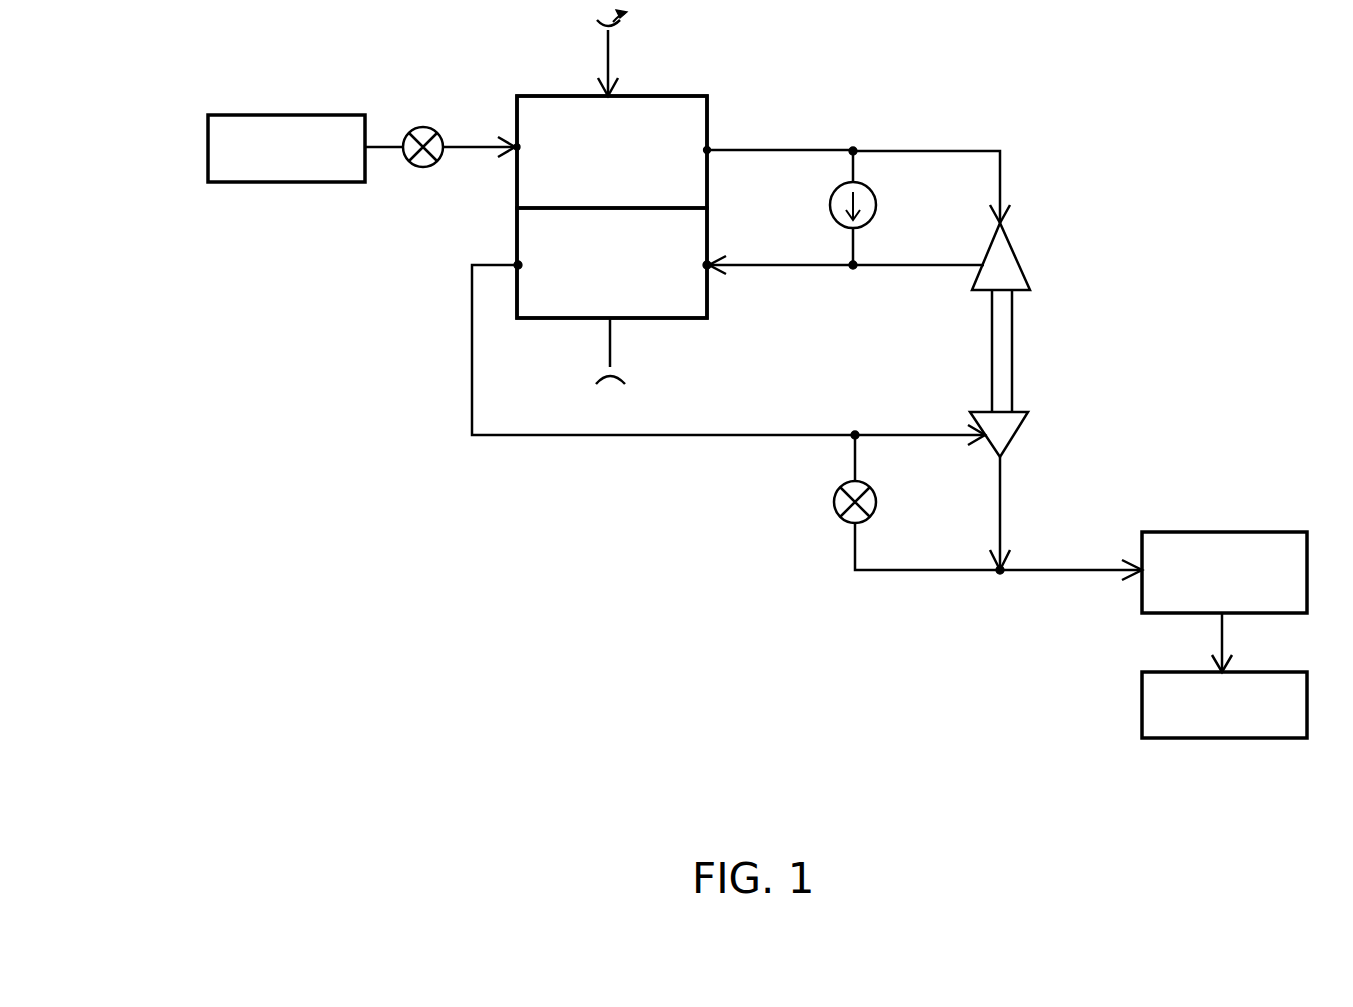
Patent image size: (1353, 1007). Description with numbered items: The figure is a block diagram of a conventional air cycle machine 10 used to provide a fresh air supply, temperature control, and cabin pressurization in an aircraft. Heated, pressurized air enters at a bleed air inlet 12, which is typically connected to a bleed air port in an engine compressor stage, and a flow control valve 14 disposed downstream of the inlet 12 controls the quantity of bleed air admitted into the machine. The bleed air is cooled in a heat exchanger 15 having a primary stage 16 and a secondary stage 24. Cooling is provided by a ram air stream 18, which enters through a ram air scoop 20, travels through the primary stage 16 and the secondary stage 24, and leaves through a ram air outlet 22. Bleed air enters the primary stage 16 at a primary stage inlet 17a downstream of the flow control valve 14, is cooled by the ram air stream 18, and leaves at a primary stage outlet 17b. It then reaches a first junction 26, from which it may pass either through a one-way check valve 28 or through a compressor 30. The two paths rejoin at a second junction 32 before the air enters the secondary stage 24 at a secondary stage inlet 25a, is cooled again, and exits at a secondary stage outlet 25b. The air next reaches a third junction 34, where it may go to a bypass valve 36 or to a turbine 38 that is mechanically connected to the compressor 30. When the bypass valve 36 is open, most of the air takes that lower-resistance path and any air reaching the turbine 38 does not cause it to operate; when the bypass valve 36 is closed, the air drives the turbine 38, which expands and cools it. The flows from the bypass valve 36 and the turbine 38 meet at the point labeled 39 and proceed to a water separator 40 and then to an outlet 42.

The air cycle machine 10 is at (1048, 120).
The bleed air inlet 12 is at (245, 115).
The flow control valve 14 is at (423, 127).
The heat exchanger 15 is at (558, 82).
The primary stage 16 is at (707, 108).
The primary stage inlet 17a is at (512, 146).
The primary stage outlet 17b is at (710, 150).
The ram air stream 18 is at (612, 52).
The ram air scoop 20 is at (627, 12).
The ram air outlet 22 is at (610, 386).
The secondary stage 24 is at (707, 222).
The secondary stage inlet 25a is at (712, 272).
The secondary stage outlet 25b is at (515, 264).
The first junction 26 is at (857, 148).
The one-way check valve 28 is at (877, 207).
The compressor 30 is at (1030, 270).
The second junction 32 is at (858, 270).
The third junction 34 is at (855, 438).
The bypass valve 36 is at (877, 502).
The turbine 38 is at (1022, 432).
The junction 39 is at (1000, 575).
The water separator 40 is at (1185, 531).
The outlet 42 is at (1142, 695).